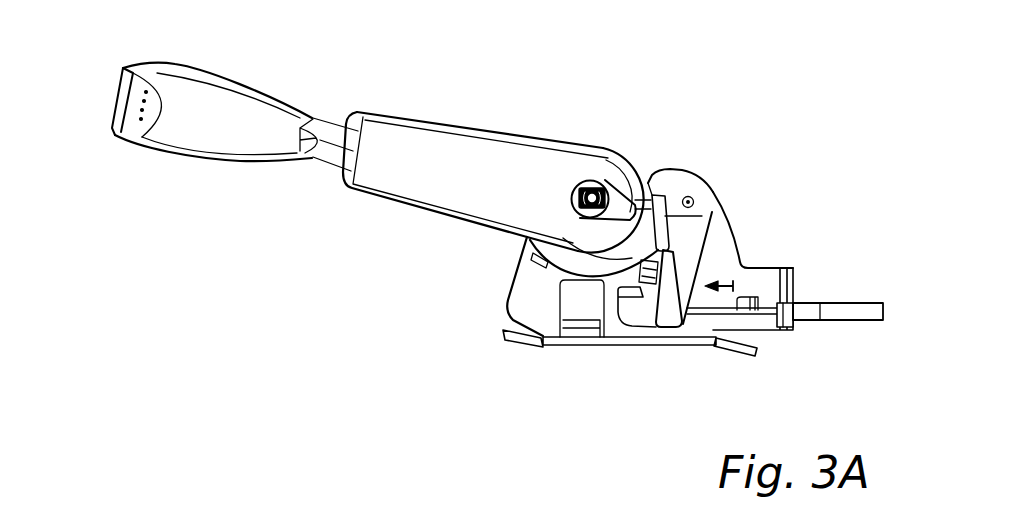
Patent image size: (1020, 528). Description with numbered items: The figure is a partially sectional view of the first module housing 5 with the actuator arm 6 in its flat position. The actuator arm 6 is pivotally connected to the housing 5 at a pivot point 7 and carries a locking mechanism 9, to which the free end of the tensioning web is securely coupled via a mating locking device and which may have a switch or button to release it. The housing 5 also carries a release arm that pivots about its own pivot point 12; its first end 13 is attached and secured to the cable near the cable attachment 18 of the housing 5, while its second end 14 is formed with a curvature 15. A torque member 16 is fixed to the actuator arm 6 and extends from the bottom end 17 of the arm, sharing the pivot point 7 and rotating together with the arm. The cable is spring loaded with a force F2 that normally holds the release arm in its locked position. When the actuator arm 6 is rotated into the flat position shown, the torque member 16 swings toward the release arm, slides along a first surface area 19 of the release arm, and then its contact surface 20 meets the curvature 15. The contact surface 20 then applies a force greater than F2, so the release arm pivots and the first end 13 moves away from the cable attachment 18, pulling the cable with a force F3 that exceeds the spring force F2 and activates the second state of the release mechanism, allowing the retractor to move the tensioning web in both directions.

The first module housing 5 is at (525, 290).
The actuator arm 6 is at (443, 160).
The pivot point 7 is at (592, 190).
The locking mechanism 9 is at (238, 102).
The pivot point 12 is at (707, 181).
The first end 13 is at (670, 326).
The second end 14 is at (684, 182).
The curvature 15 is at (704, 199).
The torque member 16 is at (630, 219).
The bottom end 17 is at (607, 172).
The cable attachment 18 is at (788, 300).
The first surface area 19 is at (673, 268).
The contact surface 20 is at (656, 194).
The spring force F2 is at (858, 286).
The pulling force F3 is at (730, 292).